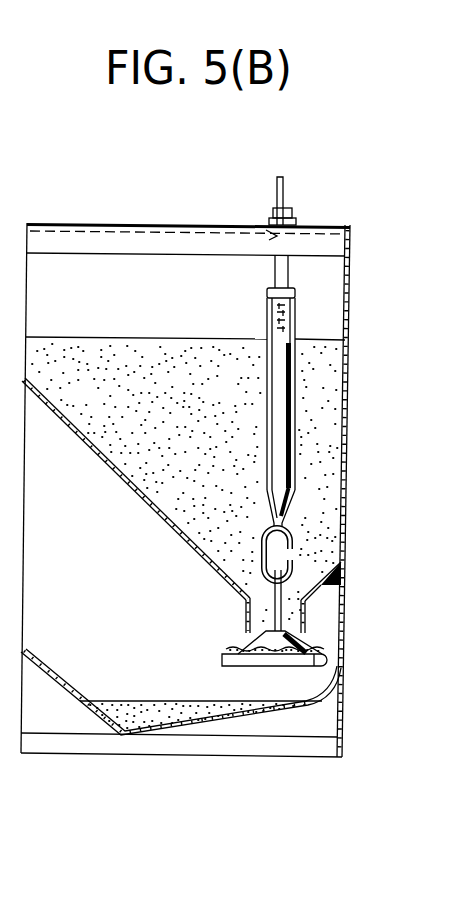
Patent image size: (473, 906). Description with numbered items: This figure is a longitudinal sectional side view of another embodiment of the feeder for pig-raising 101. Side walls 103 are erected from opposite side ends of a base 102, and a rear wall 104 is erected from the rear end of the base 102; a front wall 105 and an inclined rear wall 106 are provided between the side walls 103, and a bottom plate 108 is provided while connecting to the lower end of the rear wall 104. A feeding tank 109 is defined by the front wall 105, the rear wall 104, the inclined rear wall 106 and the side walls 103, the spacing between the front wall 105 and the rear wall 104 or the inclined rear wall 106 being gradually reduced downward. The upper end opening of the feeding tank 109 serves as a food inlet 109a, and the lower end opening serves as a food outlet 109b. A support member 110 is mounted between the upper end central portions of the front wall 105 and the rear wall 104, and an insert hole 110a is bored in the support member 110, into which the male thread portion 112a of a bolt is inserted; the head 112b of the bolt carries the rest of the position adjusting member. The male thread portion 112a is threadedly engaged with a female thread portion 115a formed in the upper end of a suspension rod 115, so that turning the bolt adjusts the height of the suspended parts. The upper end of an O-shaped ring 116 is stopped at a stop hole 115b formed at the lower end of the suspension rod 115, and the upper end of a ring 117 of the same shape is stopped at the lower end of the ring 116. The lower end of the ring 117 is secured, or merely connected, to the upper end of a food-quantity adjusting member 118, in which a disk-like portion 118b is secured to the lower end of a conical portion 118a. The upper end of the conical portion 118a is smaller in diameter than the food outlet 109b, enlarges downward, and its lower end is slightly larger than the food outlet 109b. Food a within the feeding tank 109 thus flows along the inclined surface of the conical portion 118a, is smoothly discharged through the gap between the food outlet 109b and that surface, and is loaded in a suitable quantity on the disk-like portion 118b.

The feeder for pig-raising 101 is at (362, 196).
The base 102 is at (190, 752).
The side wall 103 is at (3, 466).
The rear wall 104 is at (347, 463).
The front wall 105 is at (108, 470).
The inclined rear wall 106 is at (330, 575).
The bottom plate 108 is at (255, 718).
The feeding tank 109 is at (42, 275).
The food inlet 109a is at (182, 272).
The food outlet 109b is at (243, 650).
The support member 110 is at (110, 224).
The insert hole 110a is at (263, 230).
The male thread portion 112a is at (290, 272).
The head of bolt 112b is at (298, 220).
The suspension rod 115 is at (292, 402).
The female thread portion 115a is at (290, 320).
The stop hole 115b is at (290, 530).
The O-shaped ring 116 is at (295, 552).
The ring 117 is at (302, 611).
The food-quantity adjusting member 118 is at (321, 667).
The conical portion 118a is at (300, 634).
The disk-like portion 118b is at (288, 665).
The food a is at (128, 346).